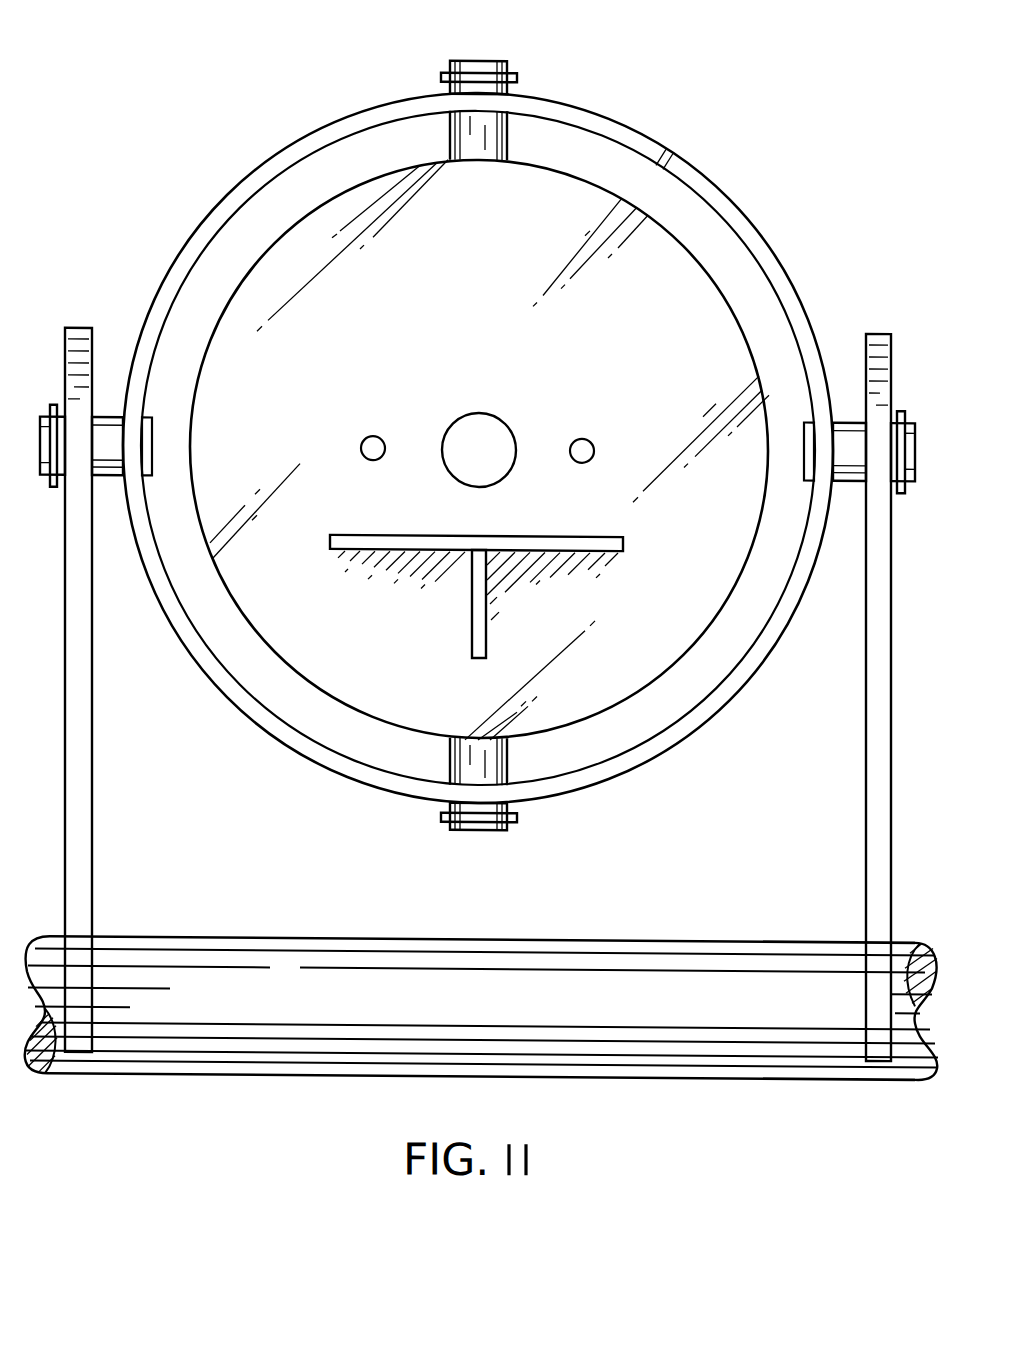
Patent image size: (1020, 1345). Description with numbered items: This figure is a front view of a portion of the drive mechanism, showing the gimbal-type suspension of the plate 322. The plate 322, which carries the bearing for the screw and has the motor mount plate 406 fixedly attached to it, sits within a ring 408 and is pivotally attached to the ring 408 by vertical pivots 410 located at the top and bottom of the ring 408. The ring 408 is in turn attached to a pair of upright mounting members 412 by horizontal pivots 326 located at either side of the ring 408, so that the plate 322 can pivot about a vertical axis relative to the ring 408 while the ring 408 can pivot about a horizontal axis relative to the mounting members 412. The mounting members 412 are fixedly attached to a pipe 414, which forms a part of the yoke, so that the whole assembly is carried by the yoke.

The plate 322 is at (441, 314).
The horizontal pivots 326 is at (106, 420).
The motor mount plate 406 is at (378, 536).
The ring 408 is at (665, 146).
The vertical pivots 410 is at (496, 60).
The mounting members 412 is at (88, 712).
The pipe 414 is at (549, 968).